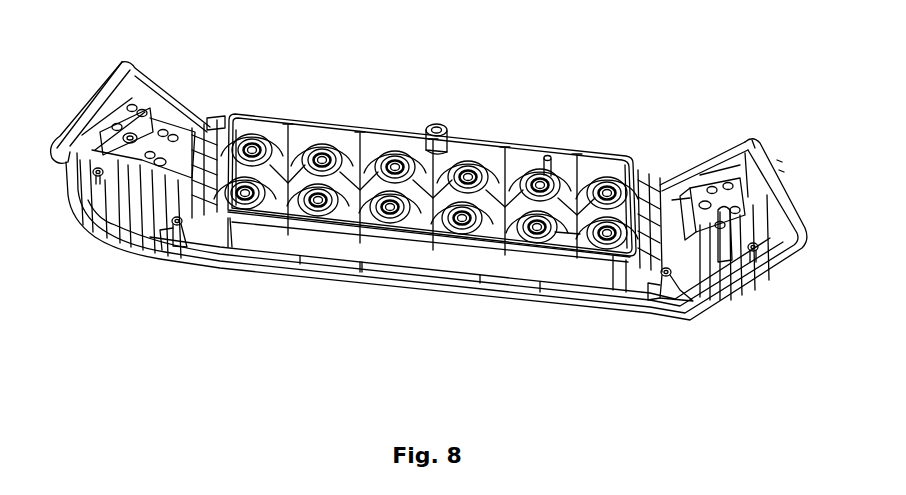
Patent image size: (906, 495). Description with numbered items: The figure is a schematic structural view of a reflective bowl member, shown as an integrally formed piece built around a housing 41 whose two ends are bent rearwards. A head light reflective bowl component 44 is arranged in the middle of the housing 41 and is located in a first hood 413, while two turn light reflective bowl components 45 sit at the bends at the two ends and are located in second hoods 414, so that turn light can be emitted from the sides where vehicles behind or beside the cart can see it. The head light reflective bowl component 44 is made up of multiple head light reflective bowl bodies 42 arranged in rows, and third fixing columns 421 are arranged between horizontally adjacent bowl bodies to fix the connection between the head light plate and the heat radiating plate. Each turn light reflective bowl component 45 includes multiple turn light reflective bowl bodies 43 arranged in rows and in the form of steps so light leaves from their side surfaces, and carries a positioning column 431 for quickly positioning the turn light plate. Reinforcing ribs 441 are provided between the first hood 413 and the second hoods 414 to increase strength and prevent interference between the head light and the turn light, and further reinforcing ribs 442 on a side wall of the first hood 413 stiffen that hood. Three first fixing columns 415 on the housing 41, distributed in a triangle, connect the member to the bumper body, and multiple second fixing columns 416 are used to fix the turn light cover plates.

The housing 41 is at (483, 292).
The first hood 413 is at (395, 248).
The second hood 414 is at (690, 258).
The first fixing column 415 is at (431, 126).
The second fixing column 416 is at (173, 240).
The head light reflective bowl body 42 is at (338, 213).
The third fixing column 421 is at (567, 233).
The turn light reflective bowl body 43 is at (710, 190).
The positioning column 431 is at (665, 187).
The head light reflective bowl component 44 is at (278, 133).
The reinforcing rib 441 is at (215, 175).
The reinforcing rib 442 is at (547, 157).
The turn light reflective bowl component 45 is at (140, 97).